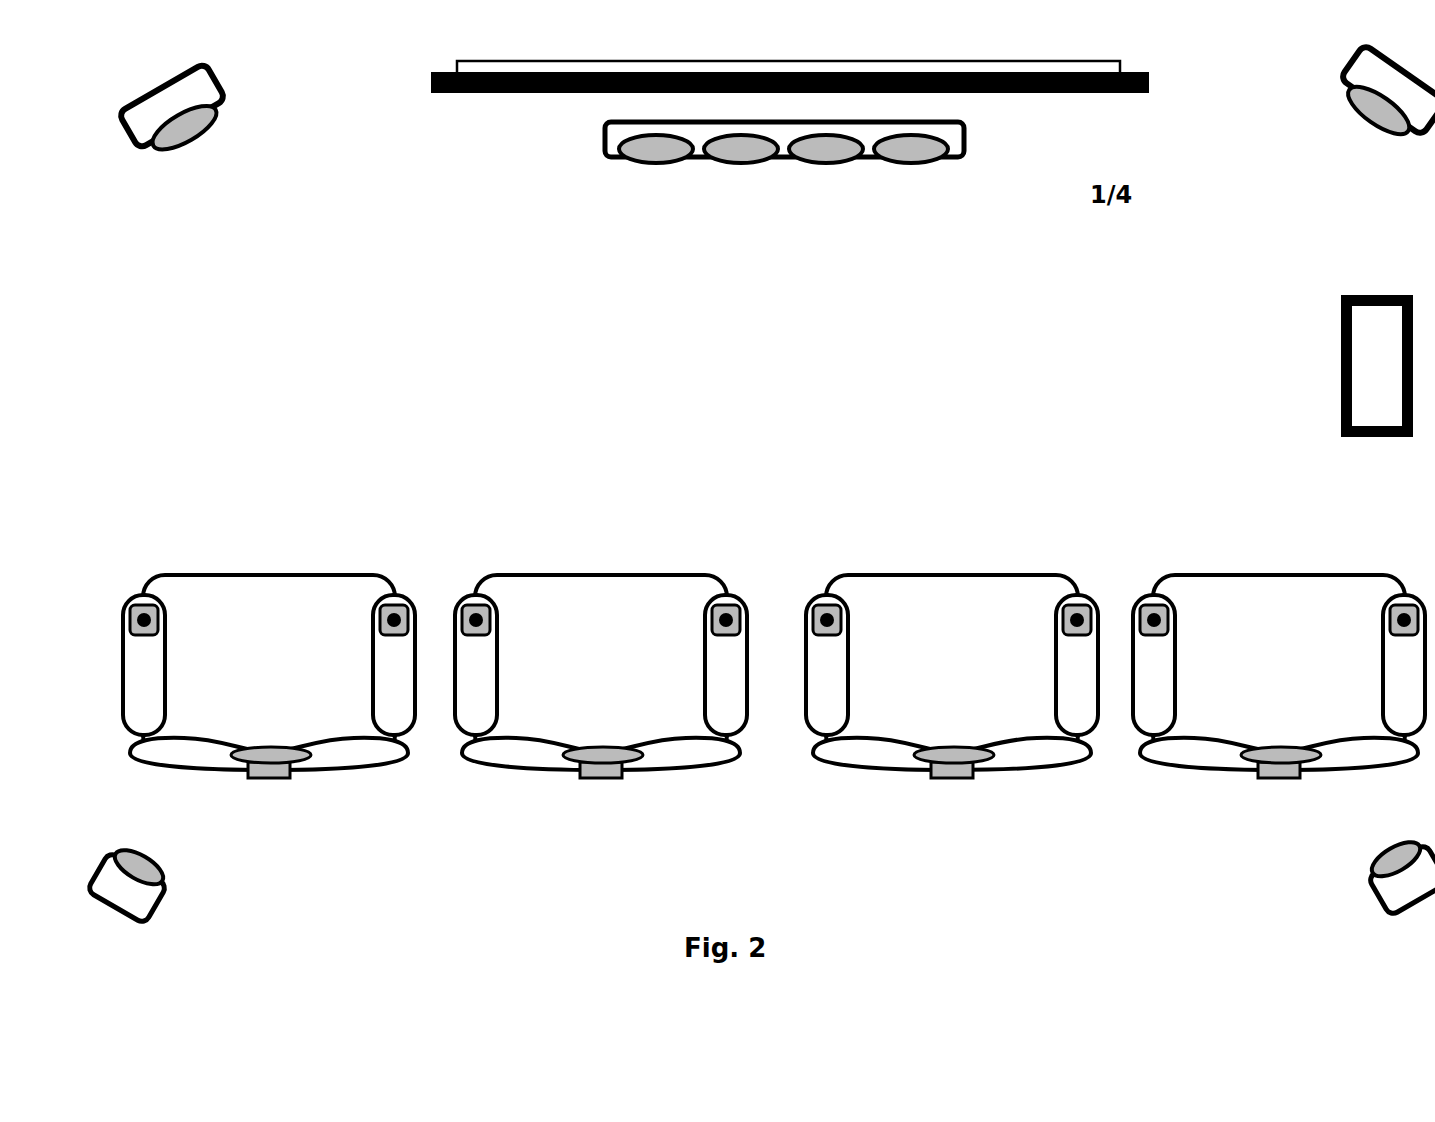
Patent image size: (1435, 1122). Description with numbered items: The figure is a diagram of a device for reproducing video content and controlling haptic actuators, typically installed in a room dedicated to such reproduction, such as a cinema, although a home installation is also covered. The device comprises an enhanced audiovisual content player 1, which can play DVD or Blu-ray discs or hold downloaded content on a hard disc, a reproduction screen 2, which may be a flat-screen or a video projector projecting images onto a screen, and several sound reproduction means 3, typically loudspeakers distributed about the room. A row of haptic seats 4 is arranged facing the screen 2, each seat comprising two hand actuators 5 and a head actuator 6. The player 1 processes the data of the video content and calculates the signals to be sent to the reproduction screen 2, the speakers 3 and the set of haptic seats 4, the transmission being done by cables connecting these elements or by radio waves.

The enhanced audiovisual content player 1 is at (1330, 352).
The reproduction screen 2 is at (461, 93).
The sound reproduction means 3 is at (194, 147).
The haptic seat 4 is at (710, 567).
The hand actuator 5 is at (706, 602).
The head actuator 6 is at (630, 764).